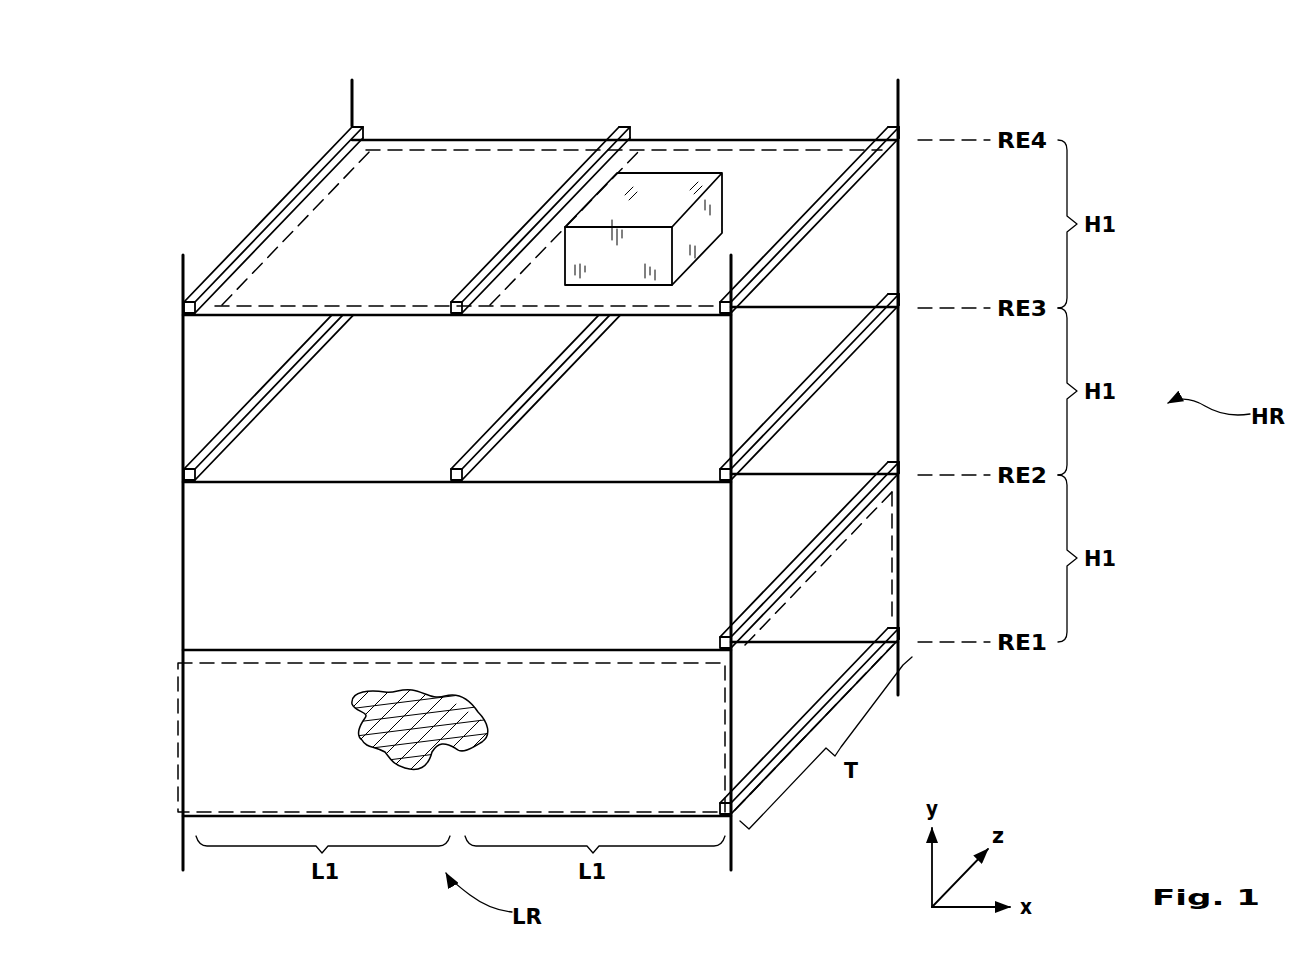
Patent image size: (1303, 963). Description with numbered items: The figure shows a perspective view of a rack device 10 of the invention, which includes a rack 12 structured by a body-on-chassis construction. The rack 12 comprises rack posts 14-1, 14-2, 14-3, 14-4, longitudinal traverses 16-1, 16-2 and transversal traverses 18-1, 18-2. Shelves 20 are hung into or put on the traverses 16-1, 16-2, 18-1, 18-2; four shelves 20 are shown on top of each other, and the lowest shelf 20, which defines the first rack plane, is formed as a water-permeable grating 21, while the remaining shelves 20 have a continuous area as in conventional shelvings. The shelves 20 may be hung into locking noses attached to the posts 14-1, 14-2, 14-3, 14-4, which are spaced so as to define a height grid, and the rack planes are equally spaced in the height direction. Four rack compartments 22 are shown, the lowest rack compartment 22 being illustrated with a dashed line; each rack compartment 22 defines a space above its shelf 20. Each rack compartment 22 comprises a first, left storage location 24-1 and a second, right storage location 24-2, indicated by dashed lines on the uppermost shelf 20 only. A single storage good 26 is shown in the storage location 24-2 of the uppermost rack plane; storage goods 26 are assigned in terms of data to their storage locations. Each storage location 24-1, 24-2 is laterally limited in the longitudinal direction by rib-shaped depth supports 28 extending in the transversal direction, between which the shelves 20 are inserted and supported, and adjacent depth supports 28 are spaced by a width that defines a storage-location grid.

The rack device 10 is at (942, 100).
The rack 12 is at (222, 204).
The rack post 14-1 is at (183, 270).
The rack post 14-2 is at (731, 380).
The rack post 14-3 is at (898, 100).
The rack post 14-4 is at (352, 96).
The longitudinal traverse 16-1 is at (387, 320).
The longitudinal traverse 16-2 is at (543, 138).
The transversal traverse 18-1 is at (285, 195).
The transversal traverse 18-2 is at (825, 232).
The shelf 20 is at (287, 625).
The grating 21 is at (356, 765).
The rack compartment 22 is at (893, 552).
The first storage location 24-1 is at (450, 150).
The second storage location 24-2 is at (697, 150).
The storage good 26 is at (722, 204).
The depth support 28 is at (571, 469).